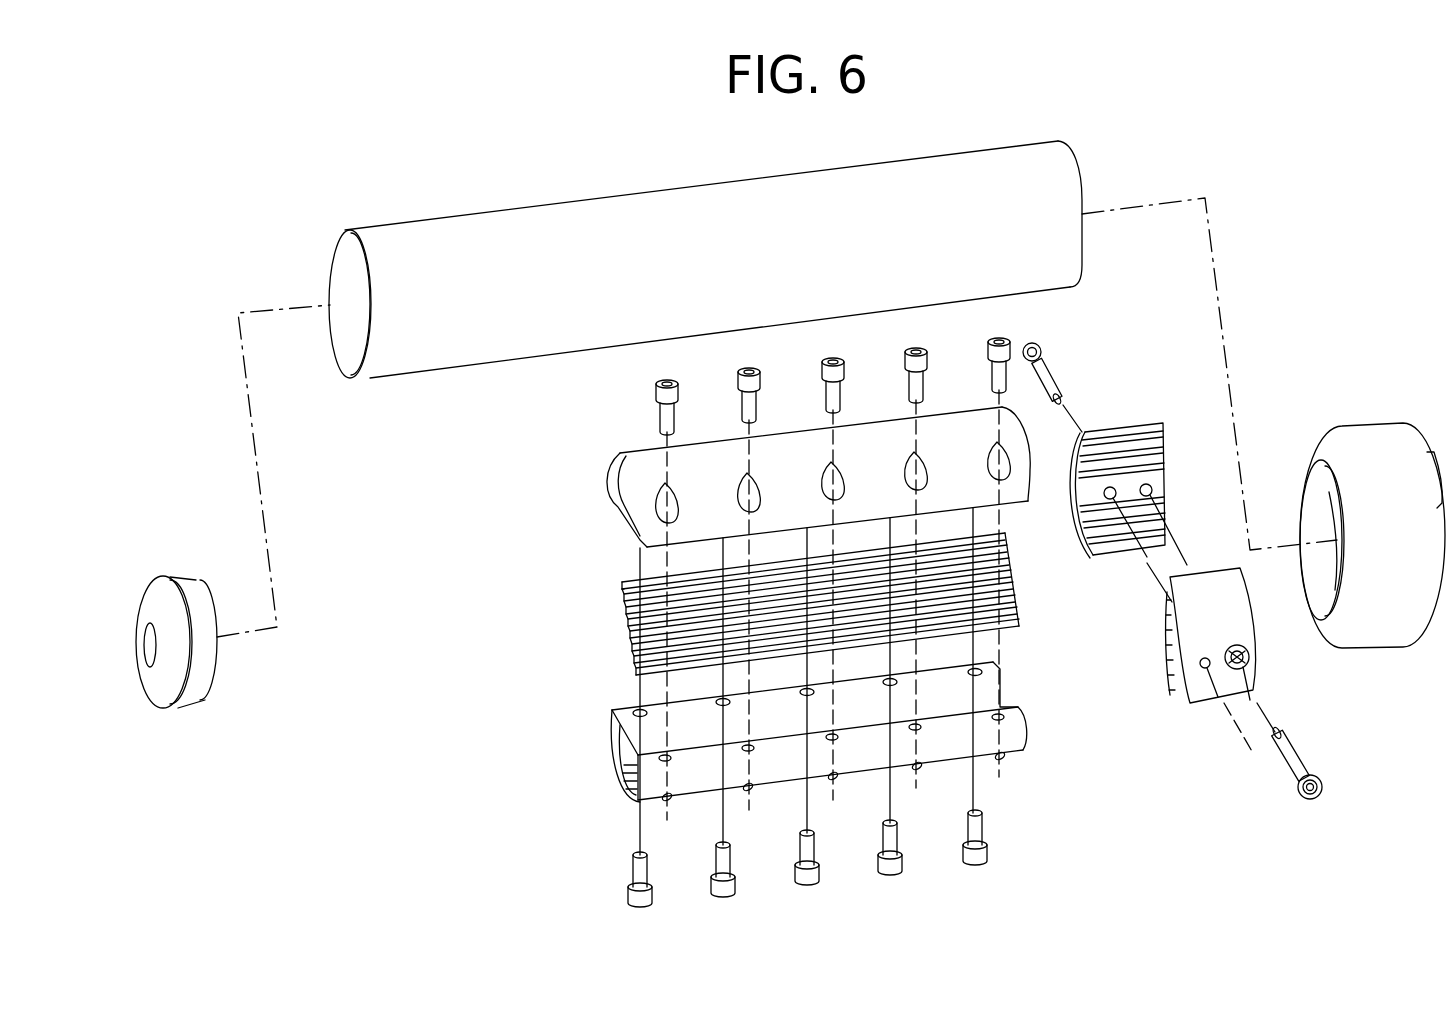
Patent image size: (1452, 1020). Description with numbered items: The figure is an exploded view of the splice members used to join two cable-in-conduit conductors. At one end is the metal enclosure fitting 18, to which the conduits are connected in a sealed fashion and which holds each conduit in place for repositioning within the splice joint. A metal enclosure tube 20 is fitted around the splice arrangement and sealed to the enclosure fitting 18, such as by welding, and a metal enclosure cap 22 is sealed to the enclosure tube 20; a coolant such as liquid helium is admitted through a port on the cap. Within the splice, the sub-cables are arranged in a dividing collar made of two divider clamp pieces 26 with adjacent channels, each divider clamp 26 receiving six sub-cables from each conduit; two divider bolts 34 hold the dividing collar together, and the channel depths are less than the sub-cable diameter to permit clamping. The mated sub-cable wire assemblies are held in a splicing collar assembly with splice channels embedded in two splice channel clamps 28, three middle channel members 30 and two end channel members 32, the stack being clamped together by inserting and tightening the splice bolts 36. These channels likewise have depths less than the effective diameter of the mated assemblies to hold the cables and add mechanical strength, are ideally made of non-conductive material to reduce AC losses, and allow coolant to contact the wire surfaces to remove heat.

The enclosure fitting 18 is at (1357, 424).
The metal enclosure tube 20 is at (650, 188).
The metal enclosure cap 22 is at (158, 578).
The divider clamp piece 26 is at (1148, 563).
The splice channel clamp 28 is at (614, 463).
The middle channel member 30 is at (626, 630).
The end channel member 32 is at (623, 583).
The divider bolt 34 is at (1303, 797).
The splice bolt 36 is at (630, 893).